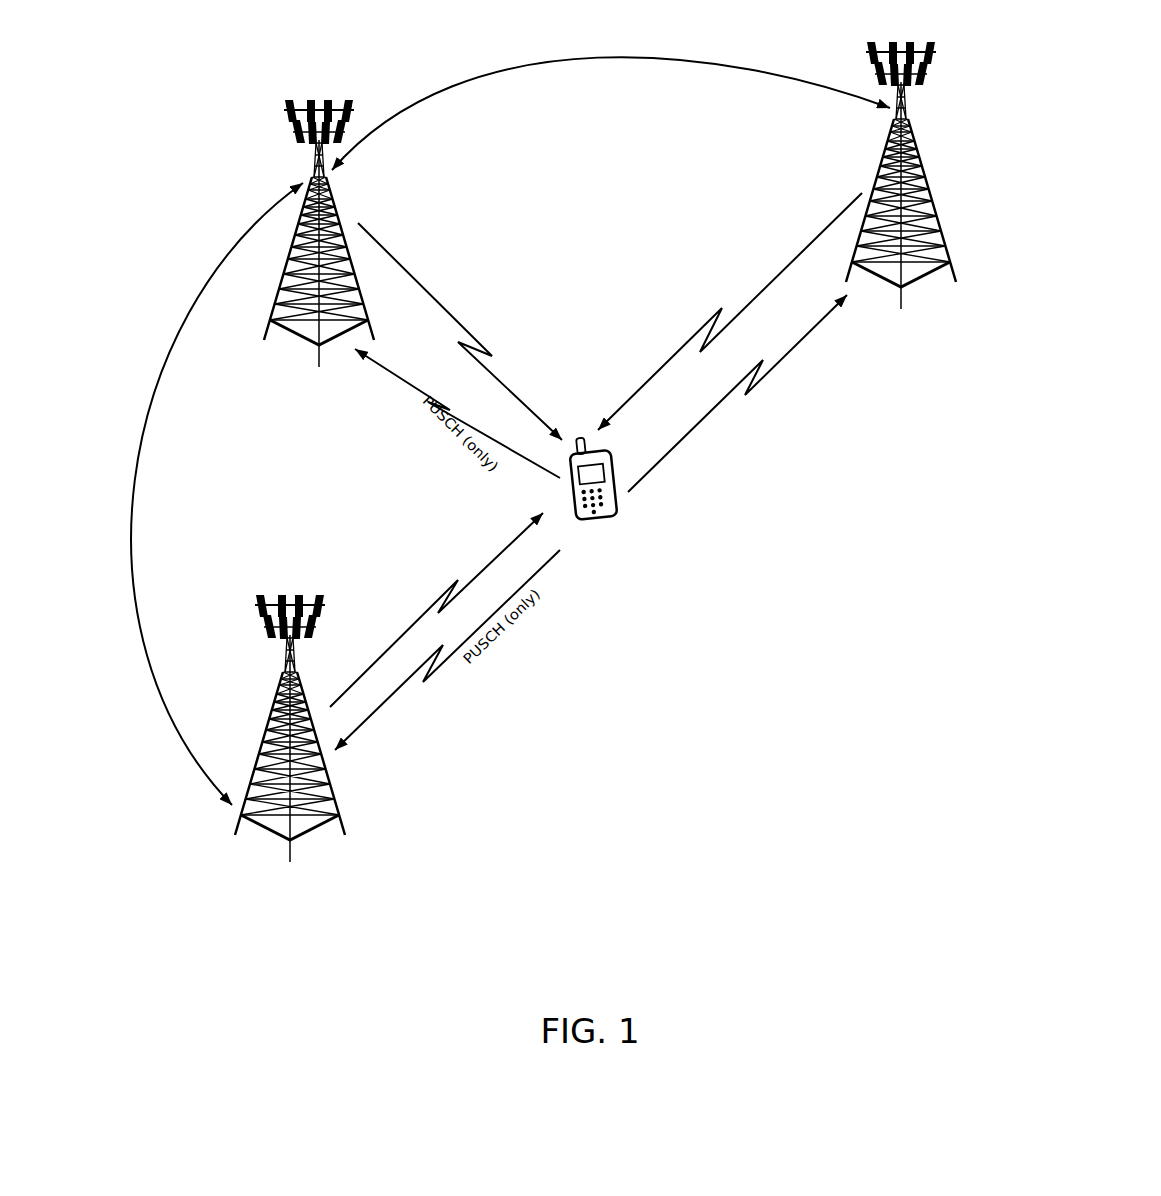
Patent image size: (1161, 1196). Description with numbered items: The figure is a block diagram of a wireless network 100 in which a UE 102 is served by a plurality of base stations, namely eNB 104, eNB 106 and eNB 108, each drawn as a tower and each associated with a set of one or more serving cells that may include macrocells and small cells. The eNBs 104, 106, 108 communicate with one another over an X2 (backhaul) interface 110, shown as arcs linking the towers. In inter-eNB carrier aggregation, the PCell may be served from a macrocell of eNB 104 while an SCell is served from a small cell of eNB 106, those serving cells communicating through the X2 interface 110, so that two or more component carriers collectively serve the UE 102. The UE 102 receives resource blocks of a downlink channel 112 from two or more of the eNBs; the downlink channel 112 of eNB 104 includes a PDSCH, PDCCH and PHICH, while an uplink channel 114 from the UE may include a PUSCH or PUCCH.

The wireless network 100 is at (598, 646).
The UE 102 is at (610, 522).
The eNB 104 is at (938, 62).
The eNB 106 is at (282, 127).
The eNB 108 is at (262, 597).
The X2 (backhaul) interface 110 is at (680, 56).
The downlink channel 112 is at (422, 277).
The uplink channel 114 is at (695, 432).